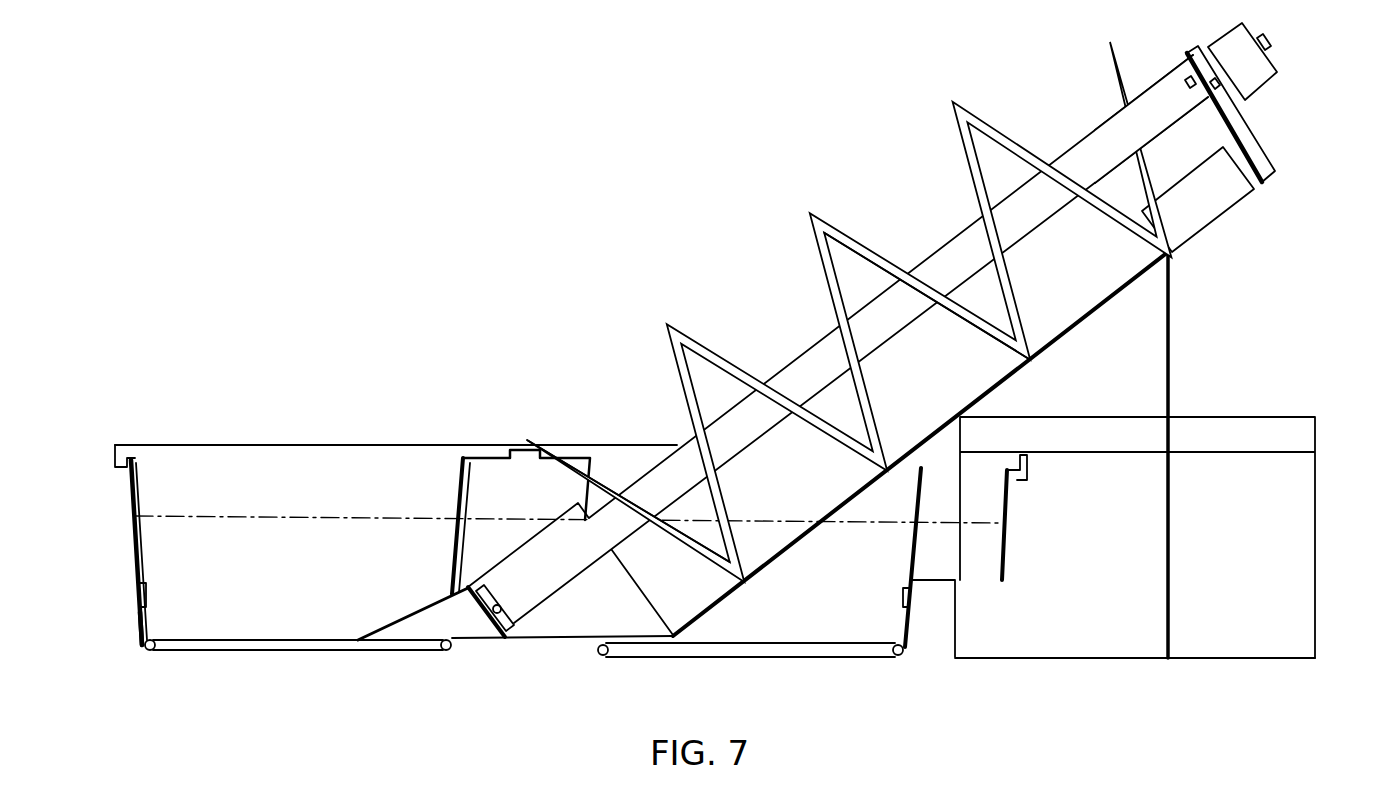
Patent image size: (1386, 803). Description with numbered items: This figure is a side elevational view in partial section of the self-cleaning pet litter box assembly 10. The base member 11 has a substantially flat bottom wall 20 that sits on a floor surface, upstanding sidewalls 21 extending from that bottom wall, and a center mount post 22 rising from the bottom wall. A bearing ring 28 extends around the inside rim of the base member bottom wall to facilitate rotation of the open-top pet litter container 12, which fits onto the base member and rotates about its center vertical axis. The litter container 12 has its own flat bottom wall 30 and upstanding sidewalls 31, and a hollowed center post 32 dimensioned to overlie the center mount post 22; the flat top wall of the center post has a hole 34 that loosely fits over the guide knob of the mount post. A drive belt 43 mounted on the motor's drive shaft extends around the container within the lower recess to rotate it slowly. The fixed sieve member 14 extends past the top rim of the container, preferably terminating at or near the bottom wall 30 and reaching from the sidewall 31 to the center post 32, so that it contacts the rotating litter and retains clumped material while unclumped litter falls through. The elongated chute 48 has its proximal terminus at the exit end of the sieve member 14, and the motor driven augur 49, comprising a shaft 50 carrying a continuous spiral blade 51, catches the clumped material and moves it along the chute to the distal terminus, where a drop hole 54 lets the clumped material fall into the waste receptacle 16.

The self-cleaning pet litter box assembly 10 is at (658, 225).
The base member 11 is at (140, 620).
The open-top pet litter container 12 is at (142, 551).
The sieve member 14 is at (398, 630).
The waste receptacle 16 is at (1320, 565).
The bottom wall 20 is at (683, 662).
The sidewalls 21 is at (132, 528).
The center mount post 22 is at (478, 500).
The bearing ring 28 is at (147, 655).
The bottom wall 30 is at (282, 640).
The sidewalls 31 is at (140, 484).
The hollowed center post 32 is at (462, 492).
The hole 34 is at (500, 452).
The drive belt 43 is at (133, 592).
The elongated chute 48 is at (1097, 312).
The motor driven augur 49 is at (998, 116).
The shaft 50 is at (803, 360).
The continuous spiral blade 51 is at (848, 230).
The drop hole 54 is at (1243, 182).